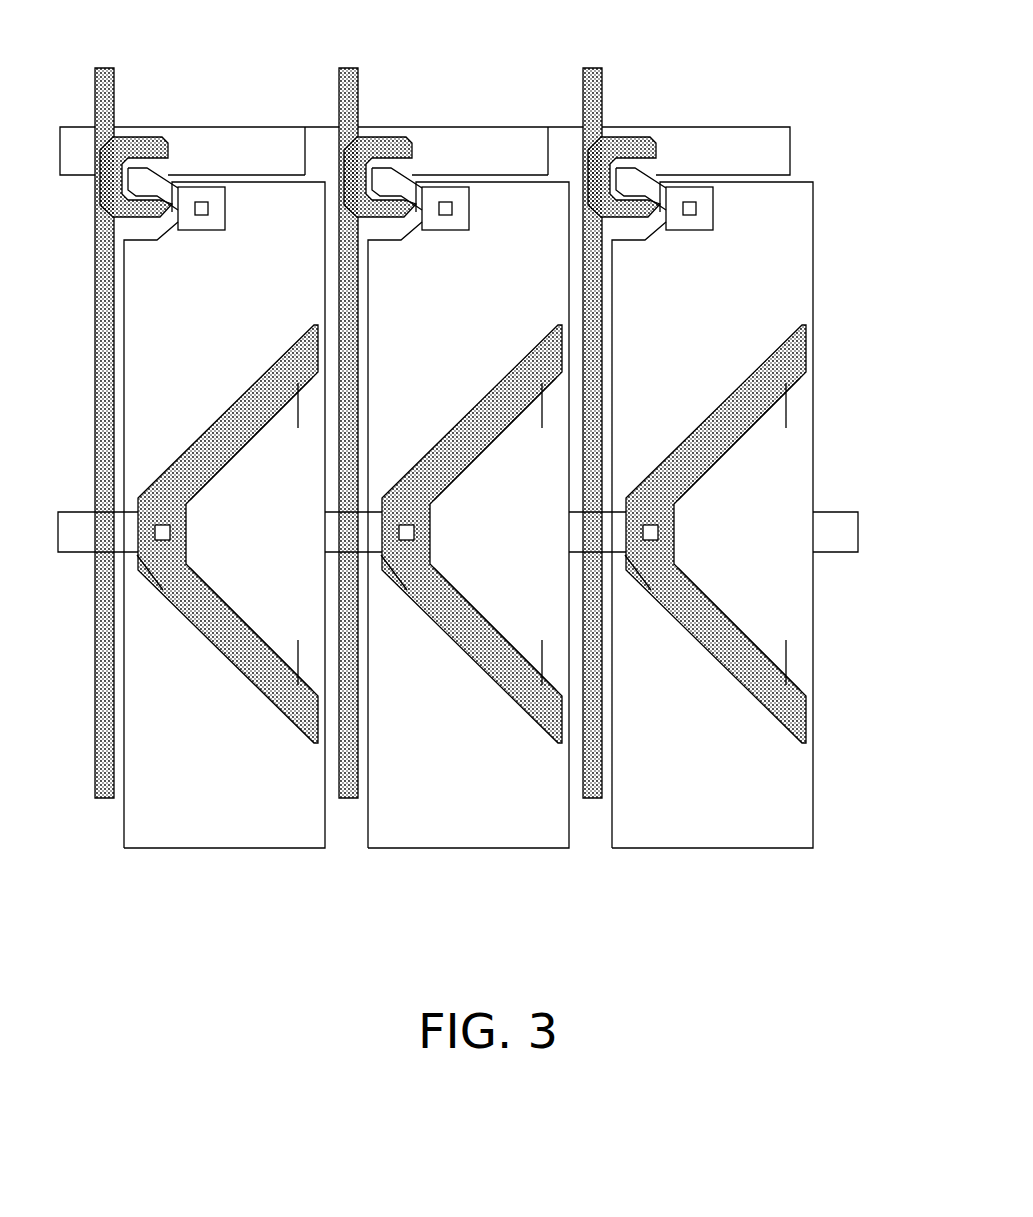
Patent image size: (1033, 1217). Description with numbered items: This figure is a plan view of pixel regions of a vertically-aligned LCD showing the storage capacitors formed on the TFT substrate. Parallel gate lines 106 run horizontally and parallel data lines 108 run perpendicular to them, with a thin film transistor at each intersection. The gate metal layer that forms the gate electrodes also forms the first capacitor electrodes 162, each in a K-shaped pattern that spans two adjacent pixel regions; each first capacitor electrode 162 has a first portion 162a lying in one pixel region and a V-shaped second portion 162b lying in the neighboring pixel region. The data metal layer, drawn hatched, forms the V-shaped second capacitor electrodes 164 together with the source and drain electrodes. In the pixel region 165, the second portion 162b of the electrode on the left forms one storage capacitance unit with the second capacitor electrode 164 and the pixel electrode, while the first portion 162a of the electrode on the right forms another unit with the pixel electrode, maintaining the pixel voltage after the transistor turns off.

The gate line 106 is at (66, 148).
The data line 108 is at (344, 68).
The first capacitor electrode 162 is at (131, 537).
The first portion 162a is at (318, 537).
The second portion 162b is at (467, 403).
The second capacitor electrode 164 is at (427, 453).
The pixel region 165 is at (514, 215).